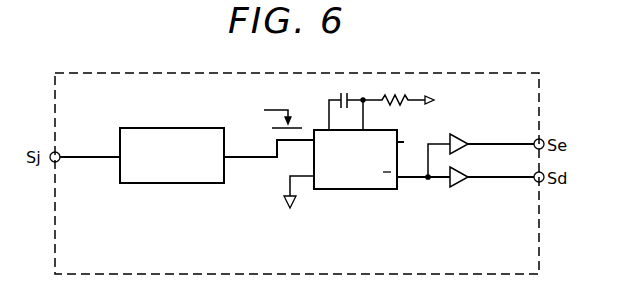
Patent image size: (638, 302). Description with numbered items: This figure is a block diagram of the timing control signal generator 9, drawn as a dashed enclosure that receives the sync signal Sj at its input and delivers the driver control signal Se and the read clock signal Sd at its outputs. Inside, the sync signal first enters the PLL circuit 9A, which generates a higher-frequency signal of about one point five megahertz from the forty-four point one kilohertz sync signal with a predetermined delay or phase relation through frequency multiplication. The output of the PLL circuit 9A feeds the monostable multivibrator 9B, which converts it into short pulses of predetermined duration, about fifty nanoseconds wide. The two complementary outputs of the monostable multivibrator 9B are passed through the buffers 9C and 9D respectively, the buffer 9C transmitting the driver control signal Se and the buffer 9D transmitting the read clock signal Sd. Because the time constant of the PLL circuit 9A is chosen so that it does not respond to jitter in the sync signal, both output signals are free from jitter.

The timing control signal generator 9 is at (432, 71).
The PLL circuit 9A is at (169, 128).
The monostable multivibrator 9B is at (340, 189).
The buffer 9C is at (462, 134).
The buffer 9D is at (461, 188).